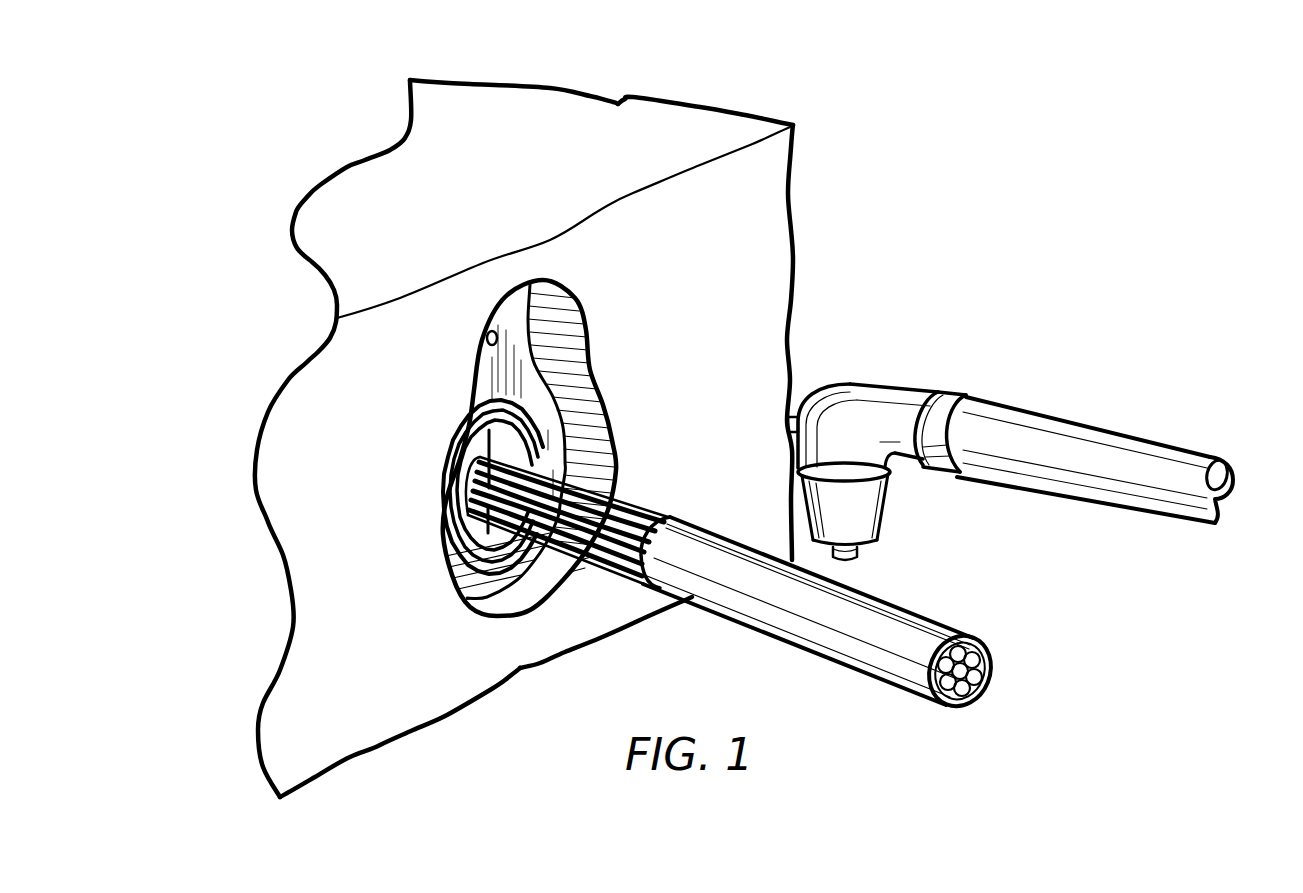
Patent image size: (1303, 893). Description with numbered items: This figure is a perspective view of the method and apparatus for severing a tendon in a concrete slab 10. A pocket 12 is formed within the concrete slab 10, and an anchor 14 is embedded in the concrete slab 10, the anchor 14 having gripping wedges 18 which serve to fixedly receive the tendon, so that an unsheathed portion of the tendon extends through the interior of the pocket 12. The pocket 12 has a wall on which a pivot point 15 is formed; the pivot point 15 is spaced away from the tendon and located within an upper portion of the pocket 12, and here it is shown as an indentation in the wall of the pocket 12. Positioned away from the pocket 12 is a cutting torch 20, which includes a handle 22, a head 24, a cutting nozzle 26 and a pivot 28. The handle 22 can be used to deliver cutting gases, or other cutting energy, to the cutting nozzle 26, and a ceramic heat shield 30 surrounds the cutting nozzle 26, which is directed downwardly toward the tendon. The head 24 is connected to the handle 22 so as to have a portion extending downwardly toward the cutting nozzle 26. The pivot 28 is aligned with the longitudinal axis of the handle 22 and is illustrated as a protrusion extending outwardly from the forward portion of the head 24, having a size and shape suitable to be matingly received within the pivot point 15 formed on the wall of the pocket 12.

The concrete slab 10 is at (467, 177).
The pocket 12 is at (543, 355).
The anchor 14 is at (480, 410).
The pivot point 15 is at (488, 333).
The gripping wedges 18 is at (518, 445).
The cutting torch 20 is at (886, 381).
The handle 22 is at (1073, 425).
The head 24 is at (837, 384).
The cutting nozzle 26 is at (857, 557).
The pivot 28 is at (790, 418).
The ceramic heat shield 30 is at (873, 510).